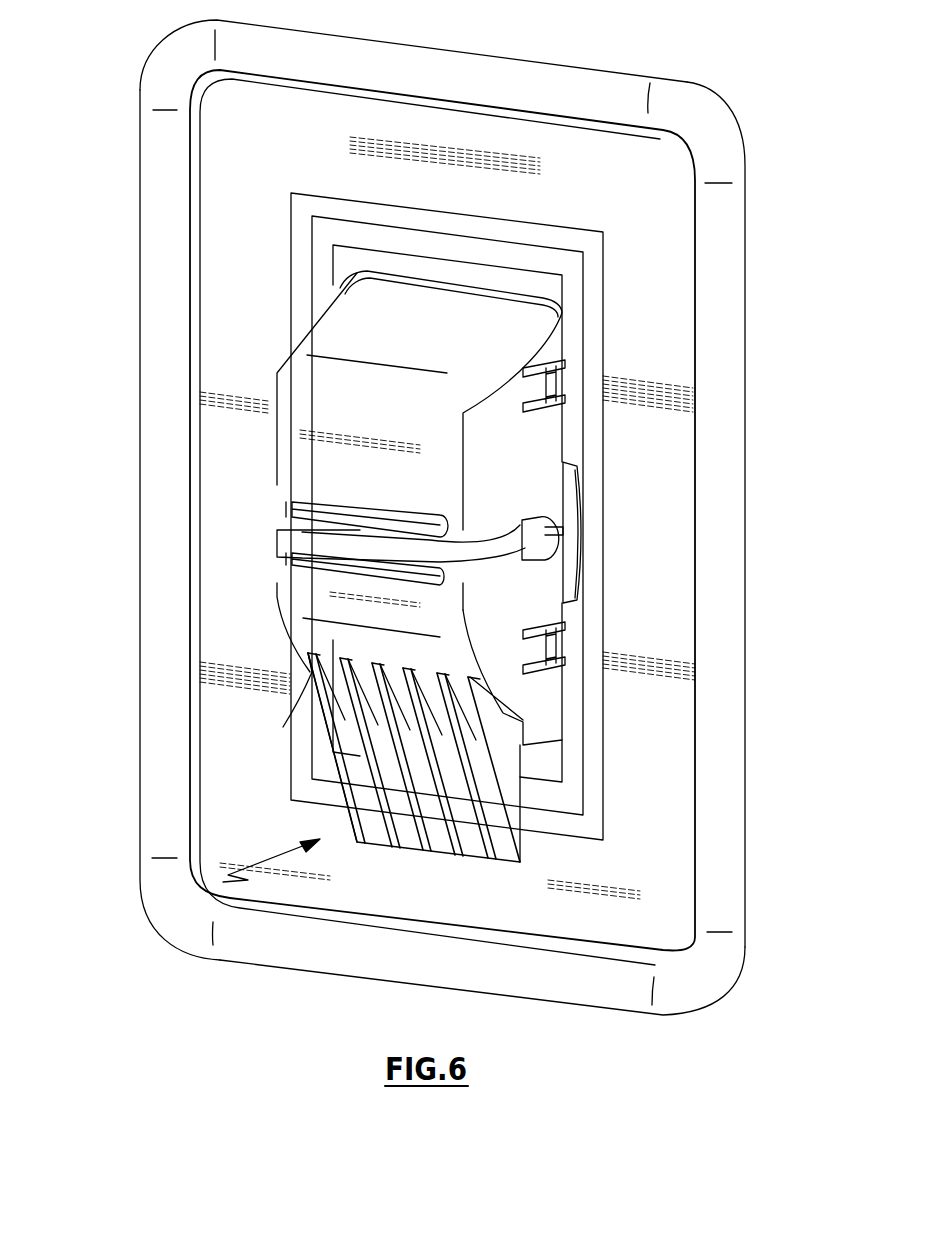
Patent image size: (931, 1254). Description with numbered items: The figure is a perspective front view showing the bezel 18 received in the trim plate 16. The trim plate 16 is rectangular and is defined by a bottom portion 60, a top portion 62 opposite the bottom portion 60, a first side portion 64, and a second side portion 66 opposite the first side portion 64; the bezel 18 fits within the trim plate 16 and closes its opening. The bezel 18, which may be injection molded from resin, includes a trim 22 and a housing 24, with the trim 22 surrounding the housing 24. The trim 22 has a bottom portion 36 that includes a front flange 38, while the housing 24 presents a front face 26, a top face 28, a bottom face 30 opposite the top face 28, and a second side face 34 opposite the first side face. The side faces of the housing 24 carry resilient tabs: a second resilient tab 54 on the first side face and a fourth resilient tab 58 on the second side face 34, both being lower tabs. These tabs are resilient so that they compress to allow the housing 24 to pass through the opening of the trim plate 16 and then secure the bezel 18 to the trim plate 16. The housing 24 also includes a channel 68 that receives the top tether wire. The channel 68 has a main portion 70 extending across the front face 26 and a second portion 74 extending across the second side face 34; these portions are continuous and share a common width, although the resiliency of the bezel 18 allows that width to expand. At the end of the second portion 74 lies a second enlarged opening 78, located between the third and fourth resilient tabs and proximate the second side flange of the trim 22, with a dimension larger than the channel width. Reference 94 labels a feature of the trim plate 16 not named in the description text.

The trim plate 16 is at (437, 521).
The bezel 18 is at (490, 313).
The trim 22 is at (668, 640).
The housing 24 is at (430, 313).
The front face 26 is at (413, 463).
The top face 28 is at (372, 313).
The bottom face 30 is at (283, 727).
The second side face 34 is at (508, 475).
The bottom portion 36 is at (223, 882).
The front flange 38 is at (520, 817).
The second resilient tab 54 is at (565, 372).
The fourth resilient tab 58 is at (565, 632).
The bottom portion 60 is at (385, 952).
The top portion 62 is at (435, 78).
The first side portion 64 is at (158, 452).
The second side portion 66 is at (710, 525).
The channel 68 is at (292, 505).
The main portion 70 is at (300, 585).
The second portion 74 is at (505, 522).
The second enlarged opening 78 is at (545, 552).
The bevel edge 94 is at (665, 833).